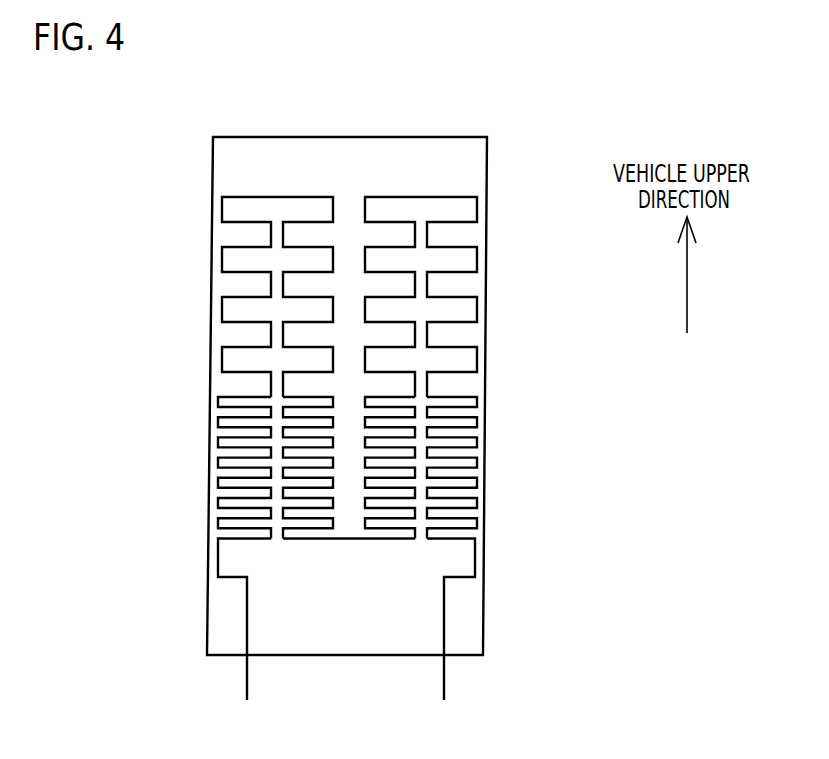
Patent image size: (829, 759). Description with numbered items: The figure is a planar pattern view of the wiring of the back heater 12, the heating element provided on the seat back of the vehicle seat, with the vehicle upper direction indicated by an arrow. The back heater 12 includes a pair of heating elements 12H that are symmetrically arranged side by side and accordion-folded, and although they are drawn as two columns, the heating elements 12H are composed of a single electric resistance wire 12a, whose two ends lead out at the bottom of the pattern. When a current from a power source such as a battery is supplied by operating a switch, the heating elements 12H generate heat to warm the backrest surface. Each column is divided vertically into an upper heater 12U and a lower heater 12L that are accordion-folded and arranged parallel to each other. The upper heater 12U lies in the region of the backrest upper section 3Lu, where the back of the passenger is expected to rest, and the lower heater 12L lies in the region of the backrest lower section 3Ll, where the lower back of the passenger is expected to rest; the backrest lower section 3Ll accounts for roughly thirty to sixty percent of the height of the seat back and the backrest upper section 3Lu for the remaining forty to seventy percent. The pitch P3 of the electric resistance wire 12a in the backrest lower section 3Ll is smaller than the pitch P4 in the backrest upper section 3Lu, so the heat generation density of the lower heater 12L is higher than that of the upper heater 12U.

The back heater 12 is at (78, 340).
The upper heater 12U is at (216, 318).
The lower heater 12L is at (217, 417).
The heating elements 12H is at (335, 130).
The electric resistance wire 12a is at (247, 680).
The pitch of the electric resistance wire in the backrest upper section P4 is at (222, 247).
The pitch of the electric resistance wire in the backrest lower section P3 is at (218, 458).
The backrest upper section 3Lu is at (497, 138).
The backrest lower section 3Ll is at (488, 657).